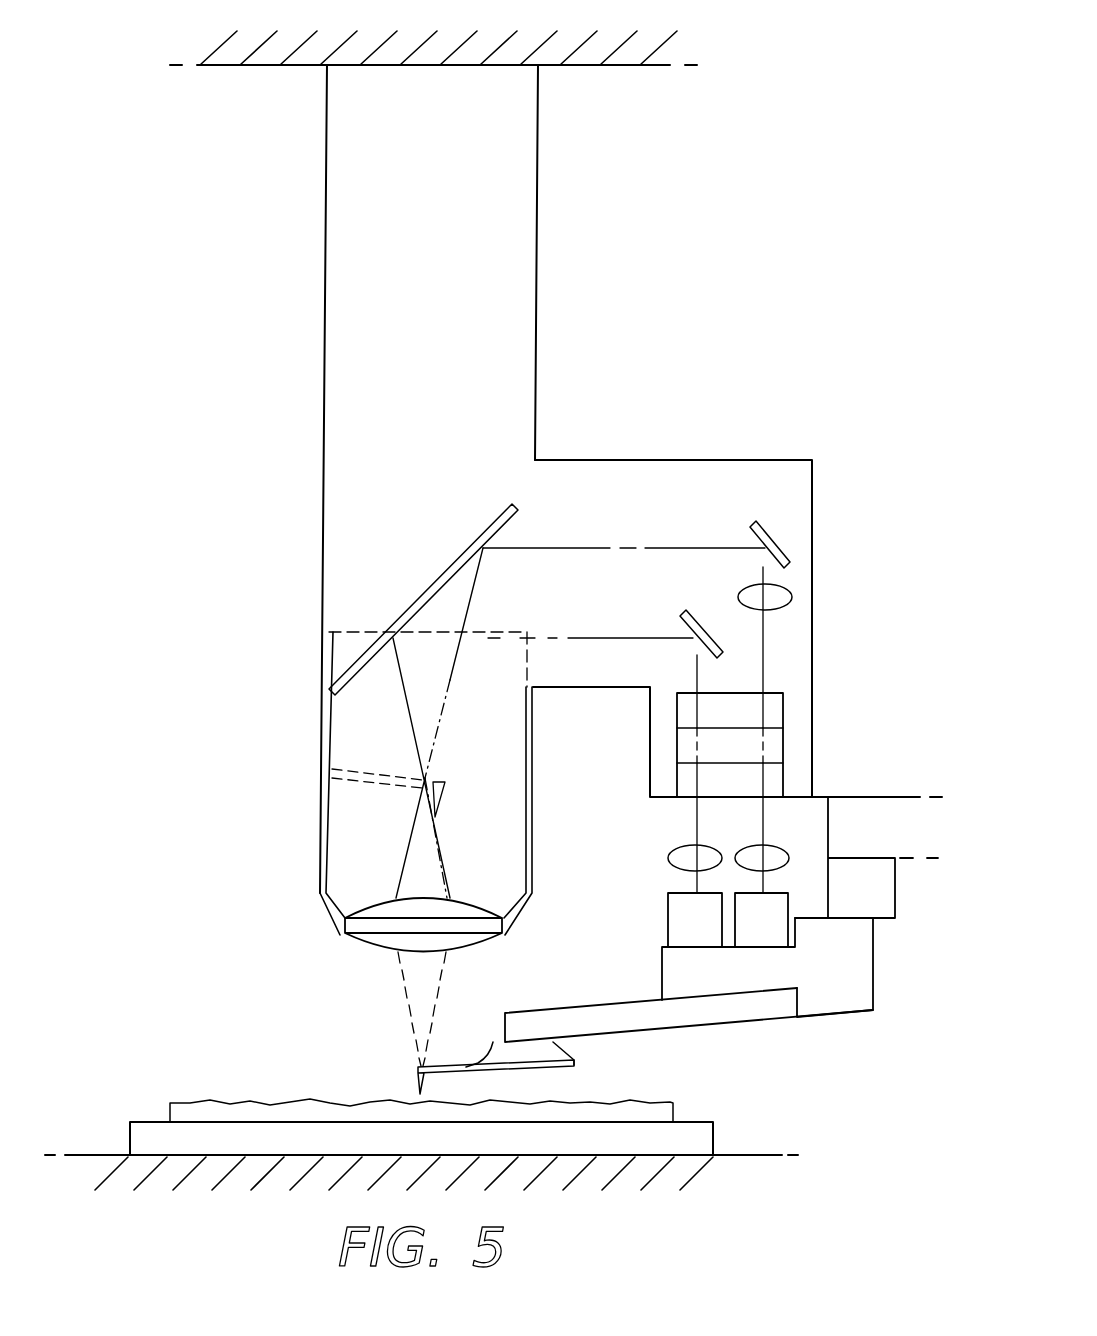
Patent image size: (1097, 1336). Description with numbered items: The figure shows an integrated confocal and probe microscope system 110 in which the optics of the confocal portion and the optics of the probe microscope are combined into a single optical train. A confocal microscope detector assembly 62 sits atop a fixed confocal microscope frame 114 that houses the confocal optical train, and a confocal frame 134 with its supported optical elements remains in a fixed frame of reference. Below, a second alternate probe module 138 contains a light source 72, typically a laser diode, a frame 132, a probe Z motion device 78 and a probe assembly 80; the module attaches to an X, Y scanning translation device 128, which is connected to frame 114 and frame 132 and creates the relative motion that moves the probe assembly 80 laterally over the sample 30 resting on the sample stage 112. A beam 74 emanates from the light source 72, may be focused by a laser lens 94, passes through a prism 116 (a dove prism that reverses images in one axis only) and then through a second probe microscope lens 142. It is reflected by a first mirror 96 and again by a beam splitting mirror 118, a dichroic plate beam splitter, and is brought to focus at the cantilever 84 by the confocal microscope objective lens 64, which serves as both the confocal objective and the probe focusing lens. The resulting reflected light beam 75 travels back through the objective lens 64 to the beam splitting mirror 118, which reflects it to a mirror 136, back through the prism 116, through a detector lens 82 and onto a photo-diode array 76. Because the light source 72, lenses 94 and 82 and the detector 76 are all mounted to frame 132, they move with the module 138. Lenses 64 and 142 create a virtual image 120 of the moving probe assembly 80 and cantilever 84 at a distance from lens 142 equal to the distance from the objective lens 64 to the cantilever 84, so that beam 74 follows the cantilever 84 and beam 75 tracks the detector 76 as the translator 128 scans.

The integrated confocal and probe microscope system 110 is at (783, 210).
The confocal microscope detector assembly 62 is at (538, 228).
The fixed confocal microscope frame 114 is at (812, 478).
The beam splitting mirror 118 is at (417, 598).
The first mirror 96 is at (789, 550).
The second probe microscope lens 142 is at (790, 604).
The mirror 136 is at (714, 640).
The confocal frame 134 is at (532, 726).
The prism 116 is at (783, 738).
The beam 74 is at (764, 777).
The reflected light beam 75 is at (695, 822).
The detector lens 82 is at (675, 868).
The laser lens 94 is at (781, 845).
The photo-diode array 76 is at (680, 914).
The light source 72 is at (762, 927).
The X, Y scanning translation device 128 is at (885, 898).
The second alternate probe module 138 is at (930, 988).
The frame 132 is at (702, 972).
The probe Z motion device 78 is at (777, 1003).
The probe assembly 80 is at (489, 1043).
The cantilever 84 is at (457, 1067).
The sample 30 is at (262, 1101).
The sample stage 112 is at (147, 1133).
The confocal microscope objective lens 64 is at (363, 947).
The virtual image 120 is at (390, 787).